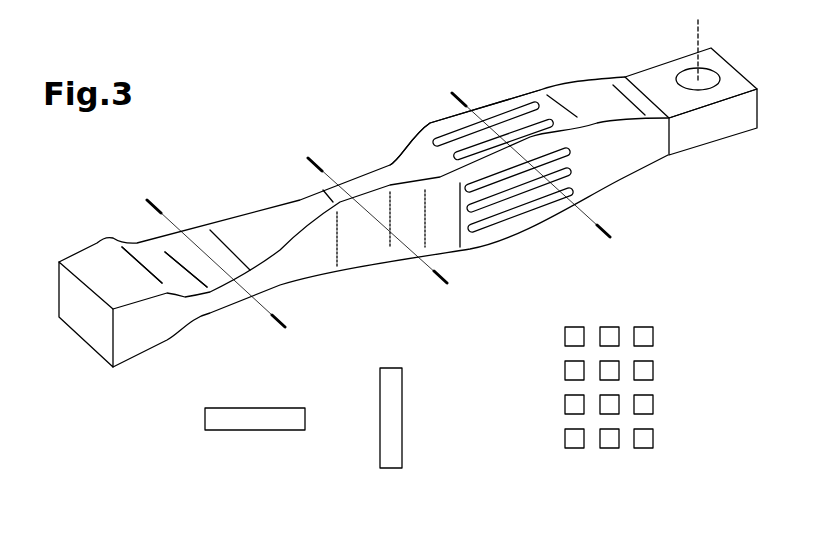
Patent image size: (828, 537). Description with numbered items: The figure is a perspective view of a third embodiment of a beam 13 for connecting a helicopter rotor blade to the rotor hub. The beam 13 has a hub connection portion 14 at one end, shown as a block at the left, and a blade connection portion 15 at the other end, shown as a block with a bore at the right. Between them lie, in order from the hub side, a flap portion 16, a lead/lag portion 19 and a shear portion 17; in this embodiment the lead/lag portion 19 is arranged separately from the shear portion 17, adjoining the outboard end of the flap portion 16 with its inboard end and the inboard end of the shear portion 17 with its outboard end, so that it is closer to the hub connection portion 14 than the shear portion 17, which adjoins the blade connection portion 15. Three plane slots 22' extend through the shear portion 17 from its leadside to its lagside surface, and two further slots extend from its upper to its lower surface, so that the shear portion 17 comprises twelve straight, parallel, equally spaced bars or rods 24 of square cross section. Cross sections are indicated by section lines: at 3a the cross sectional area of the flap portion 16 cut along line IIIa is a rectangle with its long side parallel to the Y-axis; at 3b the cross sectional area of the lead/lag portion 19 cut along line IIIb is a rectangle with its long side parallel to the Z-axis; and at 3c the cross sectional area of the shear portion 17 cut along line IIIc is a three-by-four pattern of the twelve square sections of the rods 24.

The beam 13 is at (230, 98).
The hub connection portion 14 is at (88, 264).
The blade connection portion 15 is at (655, 138).
The flap portion 16 is at (248, 145).
The shear portion 17 is at (527, 42).
The lead/lag portion 19 is at (389, 98).
The plane slots 22' is at (522, 220).
The bars or rods 24 is at (598, 337).
The cross sectional area of the flap portion 3a is at (203, 420).
The cross sectional area of the lead/lag portion 3b is at (379, 456).
The cross sectional area of the shear portion 3c is at (557, 414).
The section line IIIa- IIIa is at (150, 209).
The section line IIIb- IIIb is at (310, 168).
The section line IIIc- IIIc is at (454, 100).